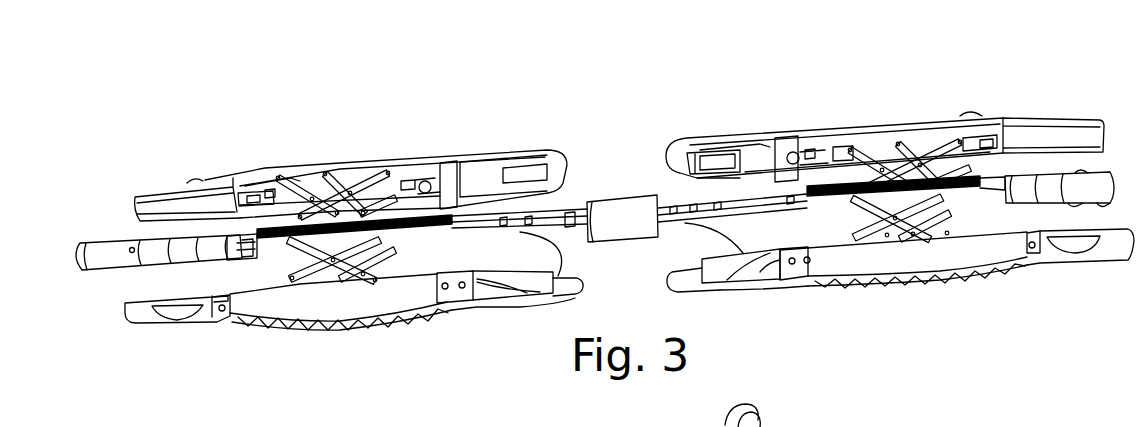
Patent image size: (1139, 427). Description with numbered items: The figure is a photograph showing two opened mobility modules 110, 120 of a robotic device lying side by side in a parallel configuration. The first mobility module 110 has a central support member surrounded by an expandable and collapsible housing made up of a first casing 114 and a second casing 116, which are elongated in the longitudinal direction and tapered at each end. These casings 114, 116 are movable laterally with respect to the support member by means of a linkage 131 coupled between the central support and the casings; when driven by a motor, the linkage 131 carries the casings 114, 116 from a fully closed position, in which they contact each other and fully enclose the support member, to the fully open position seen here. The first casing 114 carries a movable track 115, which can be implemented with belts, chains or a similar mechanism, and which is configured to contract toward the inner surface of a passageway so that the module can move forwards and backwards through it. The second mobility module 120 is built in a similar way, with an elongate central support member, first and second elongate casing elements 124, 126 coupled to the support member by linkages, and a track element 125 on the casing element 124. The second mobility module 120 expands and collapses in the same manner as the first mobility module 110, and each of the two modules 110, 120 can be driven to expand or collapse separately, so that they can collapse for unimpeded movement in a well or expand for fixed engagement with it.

The first mobility module 110 is at (350, 137).
The second casing 116 is at (283, 173).
The linkage 131 is at (330, 268).
The first casing 114 is at (237, 303).
The track 115 is at (417, 317).
The second mobility module 120 is at (880, 104).
The second casing element 126 is at (752, 142).
The first casing element 124 is at (833, 267).
The track element 125 is at (938, 282).